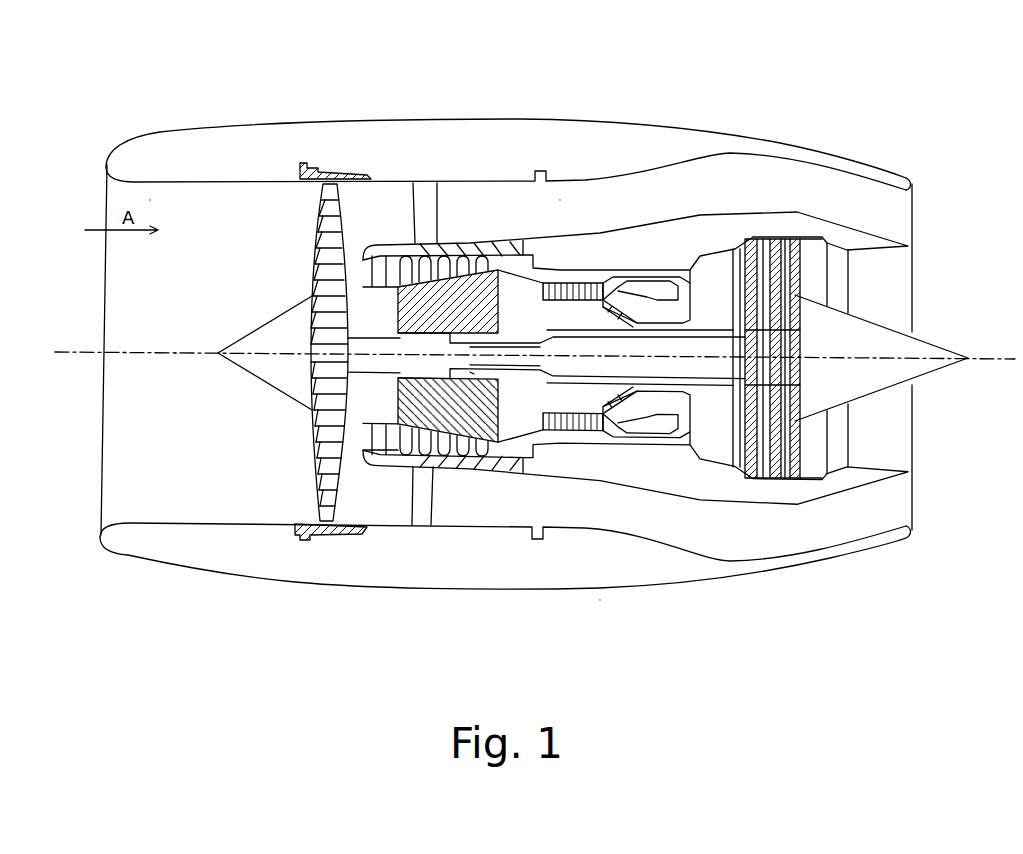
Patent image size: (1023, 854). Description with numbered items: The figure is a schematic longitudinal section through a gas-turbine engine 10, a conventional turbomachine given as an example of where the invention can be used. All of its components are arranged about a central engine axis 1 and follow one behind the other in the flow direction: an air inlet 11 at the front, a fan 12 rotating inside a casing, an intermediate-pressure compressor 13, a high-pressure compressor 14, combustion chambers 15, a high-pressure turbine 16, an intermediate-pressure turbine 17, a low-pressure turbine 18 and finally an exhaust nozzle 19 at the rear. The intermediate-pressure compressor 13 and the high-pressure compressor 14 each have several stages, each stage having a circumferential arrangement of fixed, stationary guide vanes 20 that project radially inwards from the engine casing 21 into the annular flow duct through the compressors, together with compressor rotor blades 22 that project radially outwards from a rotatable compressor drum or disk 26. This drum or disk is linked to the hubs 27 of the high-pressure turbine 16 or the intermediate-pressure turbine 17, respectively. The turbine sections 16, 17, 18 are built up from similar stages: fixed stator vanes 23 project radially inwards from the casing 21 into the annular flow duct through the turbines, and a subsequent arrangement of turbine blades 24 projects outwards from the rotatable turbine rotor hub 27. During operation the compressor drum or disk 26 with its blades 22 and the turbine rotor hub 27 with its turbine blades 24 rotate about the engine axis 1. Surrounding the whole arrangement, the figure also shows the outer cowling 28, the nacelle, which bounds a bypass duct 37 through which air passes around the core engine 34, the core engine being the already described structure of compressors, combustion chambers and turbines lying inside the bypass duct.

The engine axis 1 is at (175, 355).
The gas-turbine engine 10 is at (690, 176).
The air inlet 11 is at (257, 218).
The fan 12 is at (317, 163).
The intermediate-pressure compressor 13 is at (478, 258).
The high-pressure compressor 14 is at (592, 250).
The combustion chambers 15 is at (655, 290).
The high-pressure turbine 16 is at (728, 252).
The intermediate-pressure turbine 17 is at (740, 245).
The low-pressure turbine 18 is at (808, 240).
The exhaust nozzle 19 is at (837, 290).
The guide vanes 20 is at (405, 478).
The engine casing 21 is at (452, 470).
The compressor rotor blades 22 is at (470, 470).
The stator vanes 23 is at (726, 455).
The turbine blades 24 is at (766, 468).
The compressor drum or disk 26 is at (472, 372).
The turbine rotor hub 27 is at (743, 470).
The cowling 28 is at (588, 150).
The core engine 34 is at (906, 406).
The bypass duct 37 is at (497, 512).